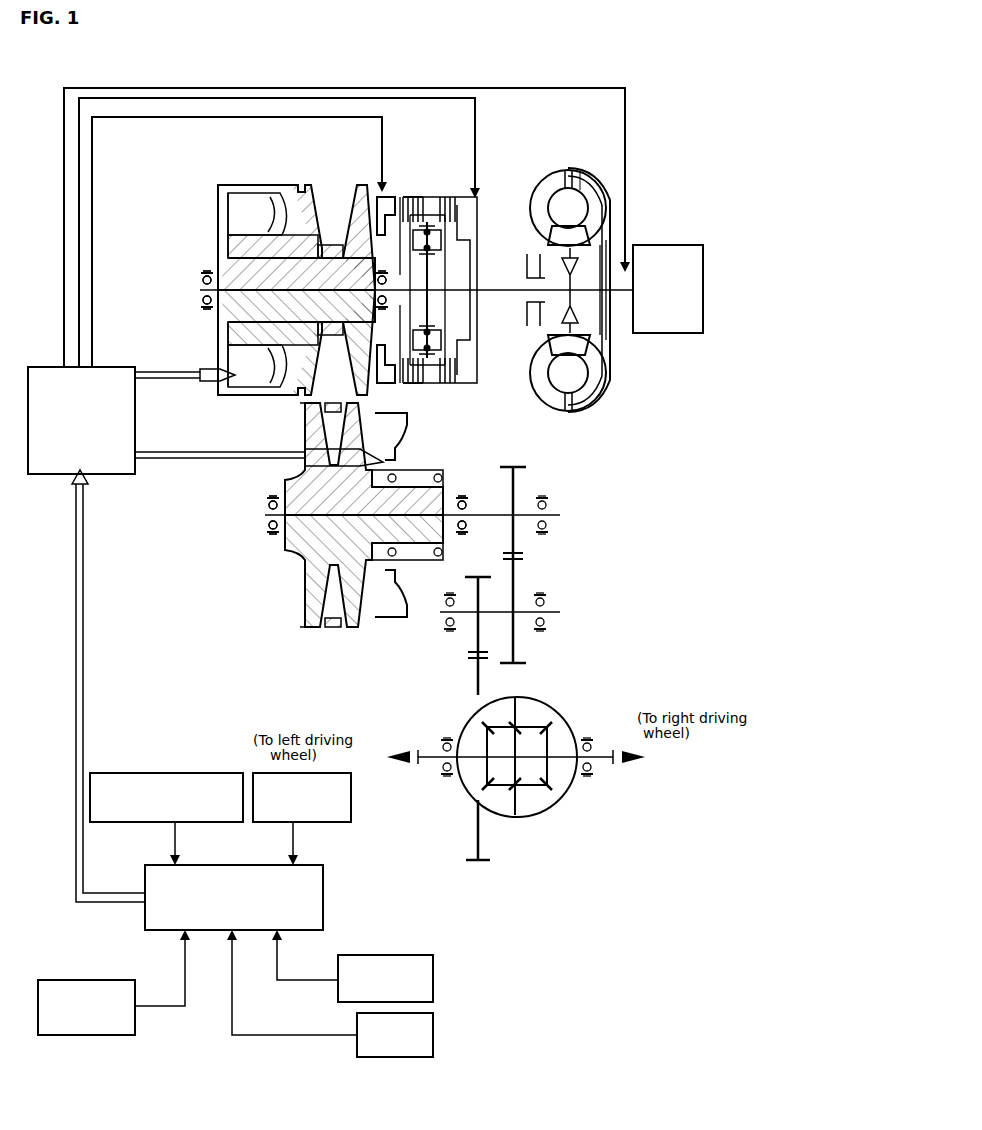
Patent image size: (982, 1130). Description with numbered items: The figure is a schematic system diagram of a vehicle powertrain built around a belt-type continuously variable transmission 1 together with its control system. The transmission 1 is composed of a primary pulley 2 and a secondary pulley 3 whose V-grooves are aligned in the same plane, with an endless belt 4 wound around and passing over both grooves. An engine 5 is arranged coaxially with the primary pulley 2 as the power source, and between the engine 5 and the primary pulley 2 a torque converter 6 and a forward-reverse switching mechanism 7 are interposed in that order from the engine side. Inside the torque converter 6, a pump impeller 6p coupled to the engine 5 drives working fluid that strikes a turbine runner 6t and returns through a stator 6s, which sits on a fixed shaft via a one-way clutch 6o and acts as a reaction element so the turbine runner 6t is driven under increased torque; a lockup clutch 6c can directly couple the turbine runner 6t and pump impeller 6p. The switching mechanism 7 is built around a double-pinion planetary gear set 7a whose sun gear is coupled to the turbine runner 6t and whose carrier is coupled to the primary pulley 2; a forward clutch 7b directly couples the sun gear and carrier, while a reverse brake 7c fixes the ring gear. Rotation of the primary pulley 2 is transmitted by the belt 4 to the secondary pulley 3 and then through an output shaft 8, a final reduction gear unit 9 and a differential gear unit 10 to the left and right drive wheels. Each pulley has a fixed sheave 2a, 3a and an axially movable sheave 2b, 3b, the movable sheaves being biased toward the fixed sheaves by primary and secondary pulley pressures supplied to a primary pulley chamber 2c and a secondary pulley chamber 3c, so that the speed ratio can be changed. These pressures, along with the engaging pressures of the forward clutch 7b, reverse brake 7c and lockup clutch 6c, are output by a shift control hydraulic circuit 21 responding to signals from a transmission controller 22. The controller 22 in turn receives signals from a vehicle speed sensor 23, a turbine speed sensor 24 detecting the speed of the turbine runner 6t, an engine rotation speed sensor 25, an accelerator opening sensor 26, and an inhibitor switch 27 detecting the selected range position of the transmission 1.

The belt-type continuously variable transmission 1 is at (240, 175).
The primary pulley 2 is at (352, 175).
The fixed sheave 2a is at (363, 183).
The movable sheave 2b is at (302, 183).
The primary pulley chamber 2c is at (225, 210).
The secondary pulley 3 is at (397, 628).
The fixed sheave 3a is at (305, 585).
The movable sheave 3b is at (305, 602).
The secondary pulley chamber 3c is at (375, 612).
The endless belt 4 is at (330, 240).
The engine 5 is at (665, 244).
The torque converter 6 is at (584, 162).
The pump impeller 6p is at (540, 182).
The turbine runner 6t is at (600, 176).
The one-way clutch 6o is at (560, 252).
The stator 6s is at (545, 325).
The lockup clutch 6c is at (612, 340).
The forward-reverse switching mechanism 7 is at (408, 178).
The double-pinion planetary gear set 7a is at (430, 212).
The forward clutch 7b is at (450, 195).
The reverse brake 7c is at (415, 195).
The output shaft 8 is at (490, 500).
The final reduction gear unit 9 is at (522, 568).
The differential gear unit 10 is at (560, 705).
The shift control hydraulic circuit 21 is at (130, 362).
The transmission controller 22 is at (145, 878).
The vehicle speed sensor 23 is at (351, 803).
The turbine speed sensor 24 is at (140, 772).
The engine rotation speed sensor 25 is at (434, 976).
The accelerator opening sensor 26 is at (90, 978).
The inhibitor switch 27 is at (434, 1028).